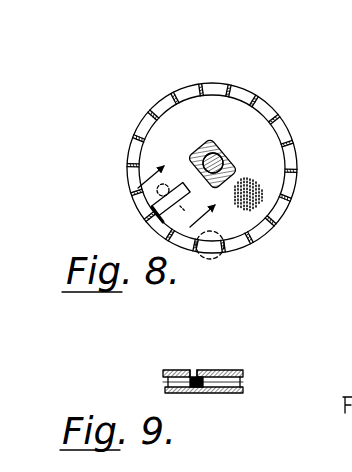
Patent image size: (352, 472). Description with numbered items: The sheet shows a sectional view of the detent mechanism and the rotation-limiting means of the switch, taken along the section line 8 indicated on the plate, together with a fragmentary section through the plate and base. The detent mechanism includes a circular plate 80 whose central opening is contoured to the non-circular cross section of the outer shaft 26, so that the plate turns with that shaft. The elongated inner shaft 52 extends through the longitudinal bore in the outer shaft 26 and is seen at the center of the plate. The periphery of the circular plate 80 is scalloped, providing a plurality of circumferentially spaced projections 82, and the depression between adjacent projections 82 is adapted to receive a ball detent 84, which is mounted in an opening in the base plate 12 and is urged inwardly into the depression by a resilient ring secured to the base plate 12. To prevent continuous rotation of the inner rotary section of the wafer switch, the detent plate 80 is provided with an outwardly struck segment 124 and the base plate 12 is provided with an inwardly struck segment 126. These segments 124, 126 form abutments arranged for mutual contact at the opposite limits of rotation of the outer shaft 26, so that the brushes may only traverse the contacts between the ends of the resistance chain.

In FIG. 8, the section line 8— 8 is at (185, 185).
In FIG. 9, the base plate 12 is at (235, 394).
In FIG. 8, the outer shaft 26 is at (210, 140).
In FIG. 8, the inner shaft 52 is at (222, 160).
In FIG. 8, the circular plate 80 is at (268, 162).
In FIG. 9, the circular plate 80 is at (227, 370).
In FIG. 8, the projections 82 is at (270, 100).
In FIG. 8, the ball detent 84 is at (221, 257).
In FIG. 8, the outwardly struck segment 124 is at (156, 213).
In FIG. 9, the outwardly struck segment 124 is at (191, 370).
In FIG. 8, the inwardly struck segment 126 is at (157, 198).
In FIG. 9, the inwardly struck segment 126 is at (205, 393).